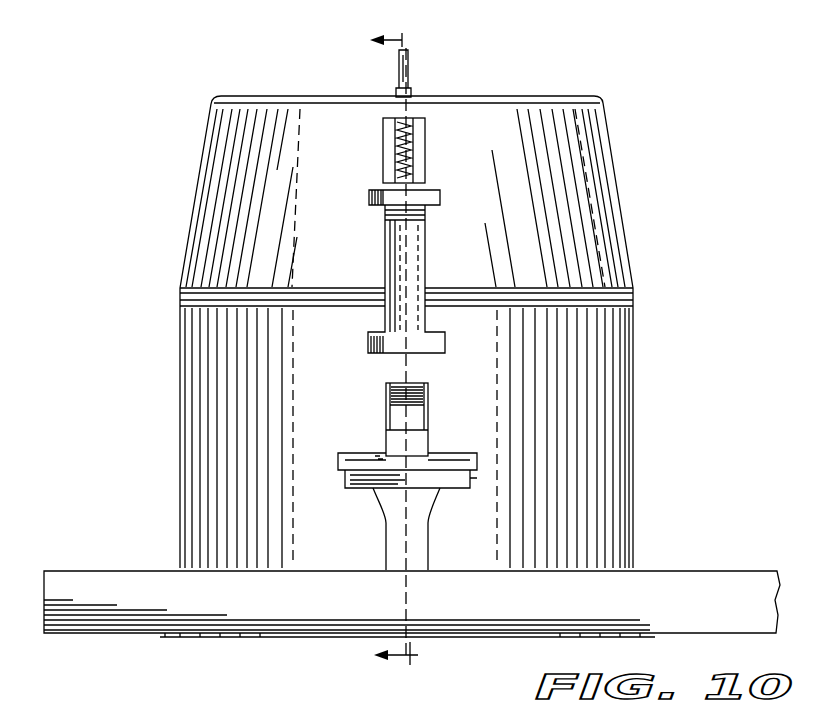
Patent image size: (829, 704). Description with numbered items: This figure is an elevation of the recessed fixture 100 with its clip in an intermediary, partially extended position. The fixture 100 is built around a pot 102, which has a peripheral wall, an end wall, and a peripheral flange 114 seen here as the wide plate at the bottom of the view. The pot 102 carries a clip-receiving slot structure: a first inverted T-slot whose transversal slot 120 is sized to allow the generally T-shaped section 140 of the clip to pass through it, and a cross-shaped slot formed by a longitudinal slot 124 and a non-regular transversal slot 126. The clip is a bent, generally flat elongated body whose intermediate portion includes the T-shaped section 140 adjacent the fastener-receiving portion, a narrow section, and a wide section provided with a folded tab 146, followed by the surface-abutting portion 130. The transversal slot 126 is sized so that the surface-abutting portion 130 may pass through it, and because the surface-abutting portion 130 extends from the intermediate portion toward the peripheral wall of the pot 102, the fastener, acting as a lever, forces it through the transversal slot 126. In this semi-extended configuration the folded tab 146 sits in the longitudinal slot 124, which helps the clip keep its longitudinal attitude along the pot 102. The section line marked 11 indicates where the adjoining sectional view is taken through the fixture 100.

The fixture 100 is at (390, 332).
The pot 102 is at (622, 192).
The peripheral flange 114 is at (648, 630).
The section line 11- 11 is at (405, 350).
The generally T-shaped section 140 is at (438, 192).
The transversal slot 120 is at (440, 335).
The folded tab 146 is at (418, 403).
The longitudinal slot 124 is at (428, 421).
The transversal slot 126 is at (472, 462).
The surface-abutting portion 130 is at (456, 486).